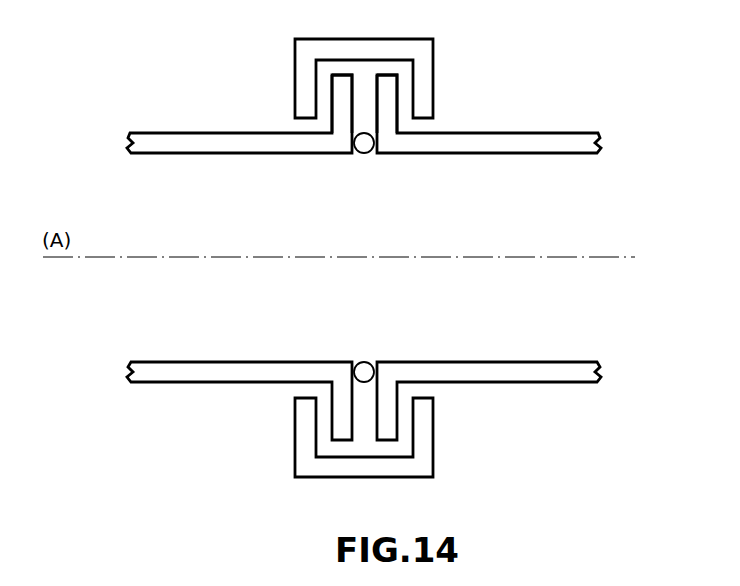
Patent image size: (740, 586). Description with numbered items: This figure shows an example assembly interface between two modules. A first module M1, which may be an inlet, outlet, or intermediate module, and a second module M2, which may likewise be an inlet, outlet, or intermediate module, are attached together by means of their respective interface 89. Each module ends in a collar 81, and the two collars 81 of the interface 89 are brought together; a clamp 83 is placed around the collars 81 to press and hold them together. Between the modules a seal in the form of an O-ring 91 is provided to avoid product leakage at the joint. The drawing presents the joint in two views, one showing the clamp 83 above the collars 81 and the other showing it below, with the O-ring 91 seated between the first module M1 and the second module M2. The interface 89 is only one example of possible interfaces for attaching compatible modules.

The first module M1 is at (170, 146).
The second module M2 is at (553, 146).
The collar 81 is at (342, 94).
The clamp 83 is at (398, 52).
The interface 89 is at (335, 162).
The O-ring 91 is at (375, 143).